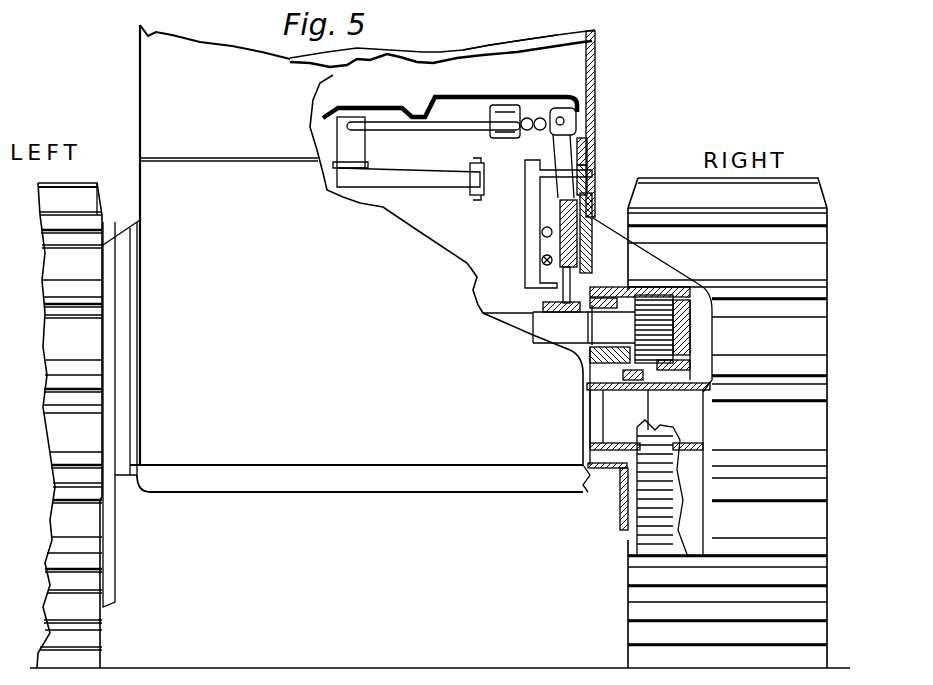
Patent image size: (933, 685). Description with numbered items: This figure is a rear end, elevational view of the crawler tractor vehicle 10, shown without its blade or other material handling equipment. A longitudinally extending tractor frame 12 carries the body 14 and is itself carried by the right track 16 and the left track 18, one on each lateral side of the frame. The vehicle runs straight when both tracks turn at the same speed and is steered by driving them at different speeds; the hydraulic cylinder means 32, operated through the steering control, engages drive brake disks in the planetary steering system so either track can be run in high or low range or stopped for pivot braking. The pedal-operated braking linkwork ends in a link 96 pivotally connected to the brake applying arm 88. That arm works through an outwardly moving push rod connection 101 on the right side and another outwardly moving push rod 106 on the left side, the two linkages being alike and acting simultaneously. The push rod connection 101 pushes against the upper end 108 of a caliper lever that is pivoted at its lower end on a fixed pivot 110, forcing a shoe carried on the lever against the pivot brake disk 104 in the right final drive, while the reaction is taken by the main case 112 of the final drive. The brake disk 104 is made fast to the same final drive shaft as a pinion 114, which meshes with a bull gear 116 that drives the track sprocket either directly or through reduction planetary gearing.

The vehicle 10 is at (507, 52).
The tractor frame 12 is at (330, 481).
The body 14 is at (148, 182).
The right longitudinal track 16 is at (653, 200).
The left longitudinal track 18 is at (93, 635).
The hydraulic cylinder means 32 is at (497, 106).
The brake applying arm 88 is at (433, 183).
The link 96 is at (490, 150).
The push rod connection 101 is at (450, 122).
The pivot brake disk 104 is at (580, 190).
The push rod 106 is at (343, 110).
The upper end of caliper lever 108 is at (548, 106).
The fixed pivot 110 is at (542, 260).
The main case of the final drive 112 is at (542, 232).
The pinion 114 is at (652, 297).
The bull gear 116 is at (643, 503).